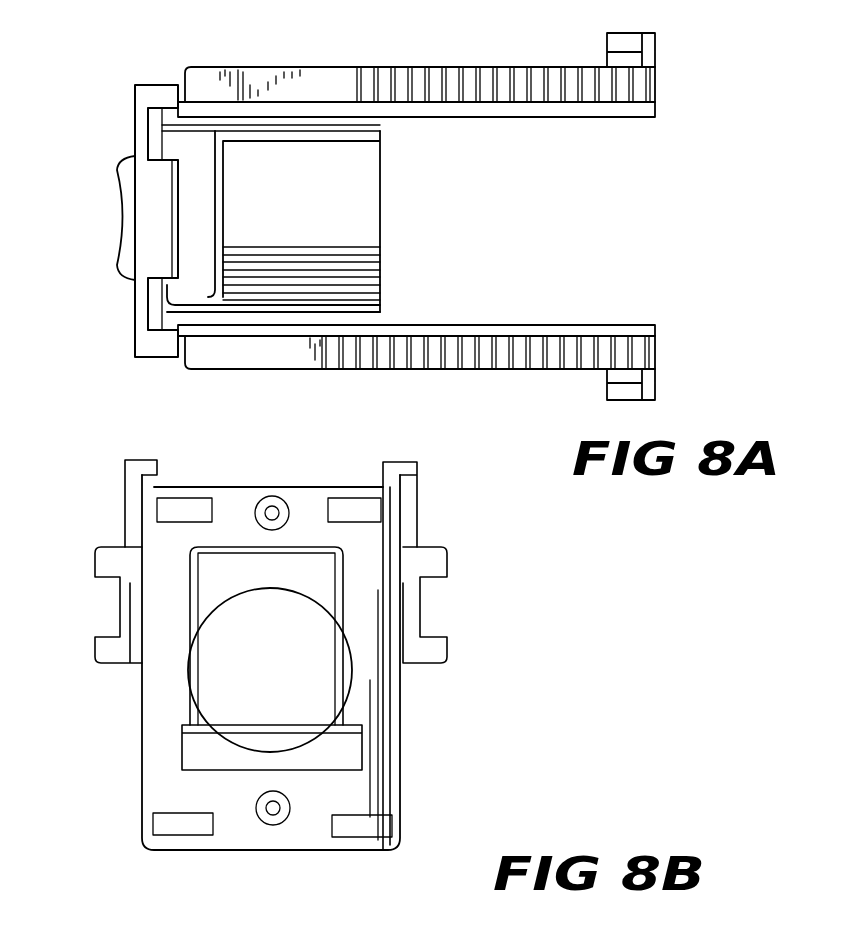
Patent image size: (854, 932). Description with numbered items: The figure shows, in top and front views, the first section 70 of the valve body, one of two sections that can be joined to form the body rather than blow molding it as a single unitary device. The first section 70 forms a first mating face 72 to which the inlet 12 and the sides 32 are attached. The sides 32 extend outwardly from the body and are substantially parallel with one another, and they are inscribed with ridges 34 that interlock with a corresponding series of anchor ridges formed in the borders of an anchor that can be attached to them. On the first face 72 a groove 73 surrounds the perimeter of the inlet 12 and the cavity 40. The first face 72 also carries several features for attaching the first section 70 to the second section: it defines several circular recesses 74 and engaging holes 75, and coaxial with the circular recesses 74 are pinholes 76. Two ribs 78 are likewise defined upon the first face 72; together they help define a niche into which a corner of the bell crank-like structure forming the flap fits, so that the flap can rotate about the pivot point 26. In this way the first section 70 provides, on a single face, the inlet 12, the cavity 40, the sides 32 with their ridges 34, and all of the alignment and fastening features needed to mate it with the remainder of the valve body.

In FIG. 8A, the inlet 12 is at (388, 228).
In FIG. 8B, the inlet 12 is at (237, 680).
In FIG. 8B, the pivot point 26 is at (343, 750).
In FIG. 8A, the sides 32 is at (655, 108).
In FIG. 8A, the ridges 34 is at (477, 363).
In FIG. 8B, the cavity 40 is at (245, 572).
In FIG. 8A, the first section 70 is at (240, 62).
In FIG. 8A, the first mating face 72 is at (132, 122).
In FIG. 8B, the first mating face 72 is at (373, 793).
In FIG. 8B, the groove 73 is at (190, 563).
In FIG. 8B, the circular recesses 74 is at (272, 508).
In FIG. 8B, the engaging holes 75 is at (367, 827).
In FIG. 8B, the pinholes 76 is at (273, 815).
In FIG. 8A, the ribs 78 is at (118, 270).